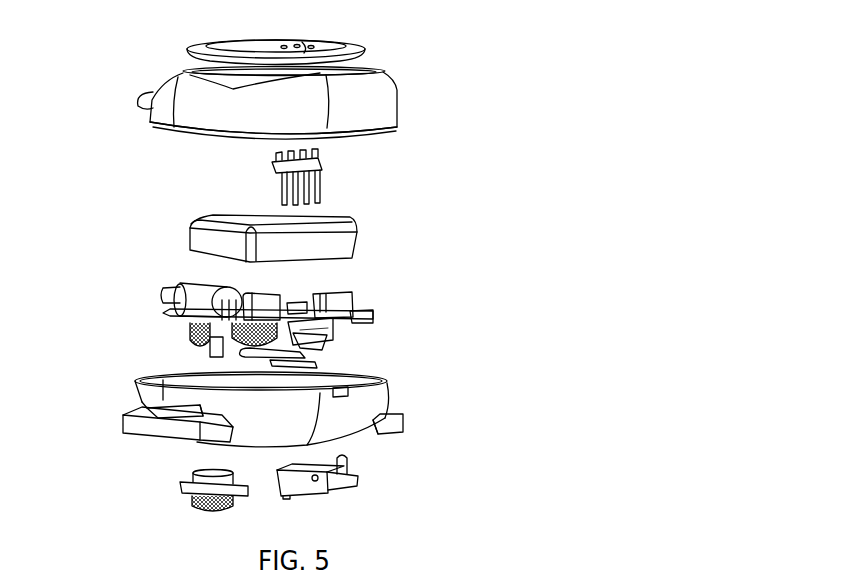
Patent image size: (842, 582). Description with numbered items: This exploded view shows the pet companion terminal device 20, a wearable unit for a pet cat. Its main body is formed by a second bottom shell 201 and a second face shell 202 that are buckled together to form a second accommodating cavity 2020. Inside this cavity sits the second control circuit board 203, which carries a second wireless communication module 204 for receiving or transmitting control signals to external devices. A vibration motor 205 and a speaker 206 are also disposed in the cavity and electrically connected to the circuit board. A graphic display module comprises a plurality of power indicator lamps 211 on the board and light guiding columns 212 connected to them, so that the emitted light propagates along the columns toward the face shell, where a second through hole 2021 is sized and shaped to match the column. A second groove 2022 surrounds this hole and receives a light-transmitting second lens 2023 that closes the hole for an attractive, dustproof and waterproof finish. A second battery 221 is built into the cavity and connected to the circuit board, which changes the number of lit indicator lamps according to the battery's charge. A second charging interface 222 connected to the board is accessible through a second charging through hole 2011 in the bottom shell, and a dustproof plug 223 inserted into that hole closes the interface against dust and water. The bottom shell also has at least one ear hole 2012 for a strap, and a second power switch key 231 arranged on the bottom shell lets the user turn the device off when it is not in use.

The pet companion terminal device 20 is at (383, 33).
The second lens 2023 is at (340, 50).
The second groove 2022 is at (178, 67).
The second through hole 2021 is at (322, 72).
The second face shell 202 is at (384, 102).
The light guiding columns 212 is at (334, 167).
The second battery 221 is at (350, 242).
The vibration motor 205 is at (185, 291).
The second control circuit board 203 is at (178, 315).
The second wireless communication module 204 is at (182, 336).
The speaker 206 is at (228, 360).
The power indicator lamps 211 is at (316, 312).
The second charging interface 222 is at (350, 331).
The second accommodating cavity 2020 is at (359, 376).
The second charging through hole 2011 is at (350, 392).
The second bottom shell 201 is at (380, 401).
The ear hole 2012 is at (147, 432).
The second power switch key 231 is at (187, 485).
The dustproof plug 223 is at (357, 480).